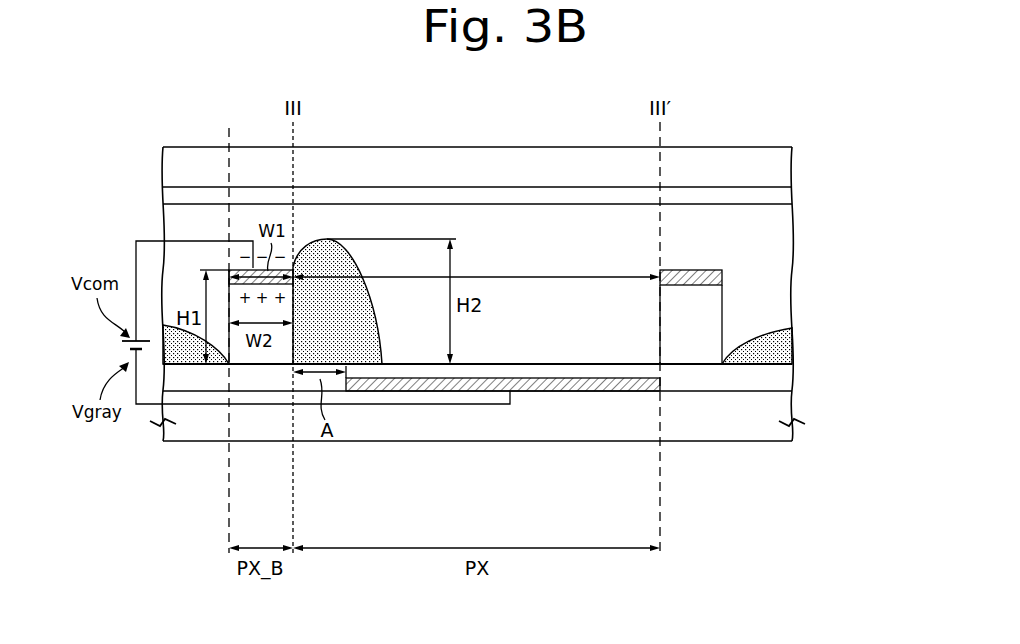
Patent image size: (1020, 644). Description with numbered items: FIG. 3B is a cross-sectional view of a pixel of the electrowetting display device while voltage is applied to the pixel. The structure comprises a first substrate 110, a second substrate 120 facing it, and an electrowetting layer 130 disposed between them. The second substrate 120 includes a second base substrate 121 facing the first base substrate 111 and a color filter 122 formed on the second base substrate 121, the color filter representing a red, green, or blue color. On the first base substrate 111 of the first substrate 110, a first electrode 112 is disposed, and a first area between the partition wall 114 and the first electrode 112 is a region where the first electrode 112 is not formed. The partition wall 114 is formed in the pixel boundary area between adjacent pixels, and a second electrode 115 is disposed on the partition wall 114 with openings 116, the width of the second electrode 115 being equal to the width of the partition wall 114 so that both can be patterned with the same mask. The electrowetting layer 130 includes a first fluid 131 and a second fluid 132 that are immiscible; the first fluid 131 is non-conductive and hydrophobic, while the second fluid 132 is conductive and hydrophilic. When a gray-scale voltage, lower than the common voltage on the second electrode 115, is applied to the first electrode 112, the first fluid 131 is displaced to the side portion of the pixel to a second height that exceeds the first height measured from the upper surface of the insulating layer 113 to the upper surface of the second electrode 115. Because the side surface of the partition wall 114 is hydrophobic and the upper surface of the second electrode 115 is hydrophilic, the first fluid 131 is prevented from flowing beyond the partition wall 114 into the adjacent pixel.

The first substrate 110 is at (548, 347).
The first base substrate 111 is at (777, 419).
The first electrode 112 is at (655, 386).
The insulating layer 113 is at (778, 378).
The partition wall 114 is at (712, 315).
The second electrode 115 is at (712, 280).
The openings 116 is at (476, 266).
The second substrate 120 is at (548, 180).
The second base substrate 121 is at (776, 164).
The color filter 122 is at (776, 196).
The electrowetting layer 130 is at (477, 388).
The first fluid 131 is at (366, 354).
The second fluid 132 is at (412, 293).